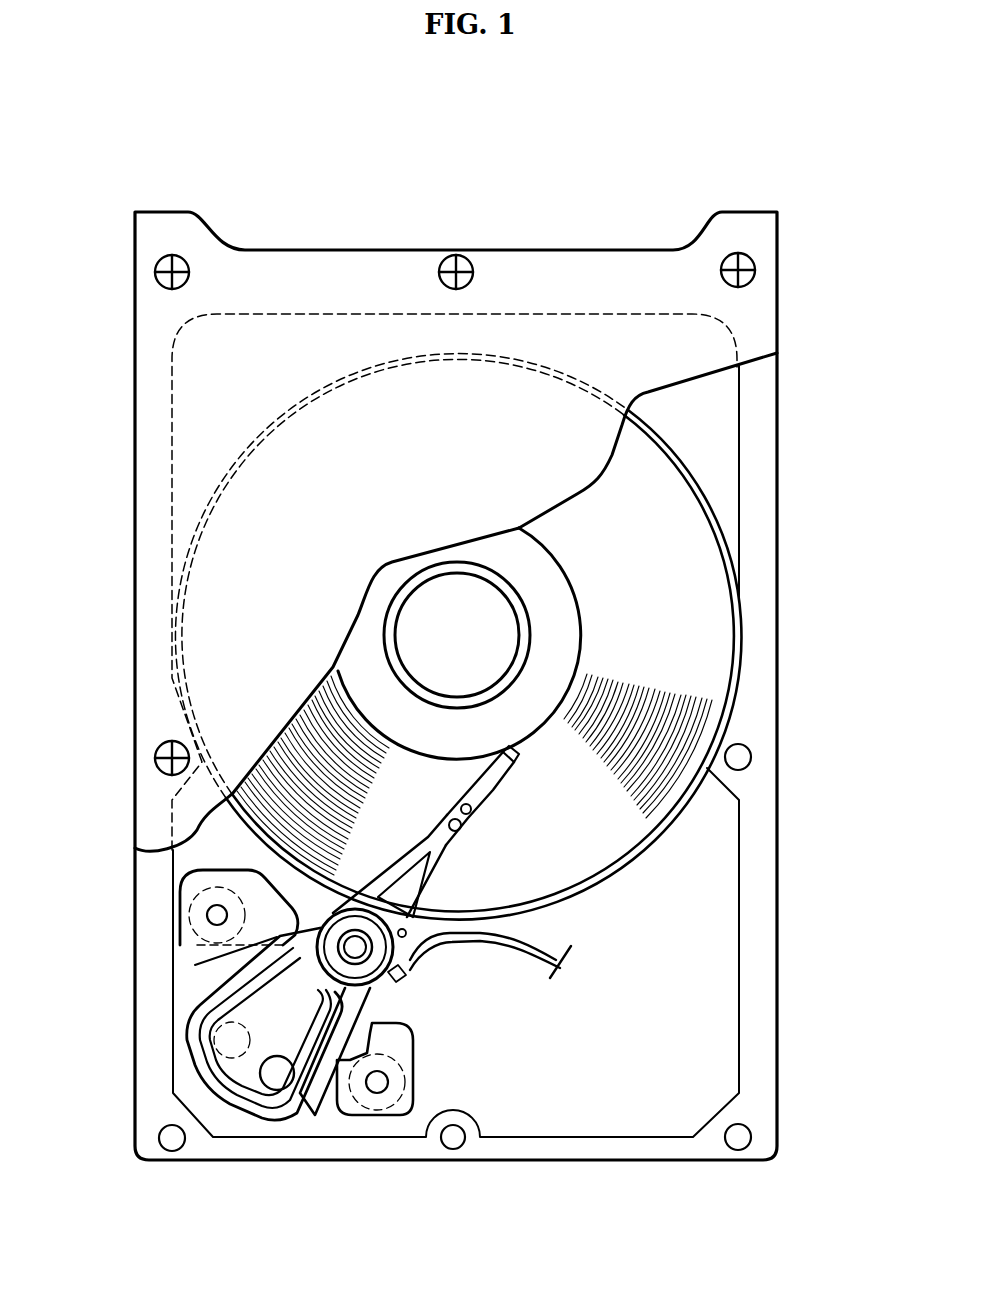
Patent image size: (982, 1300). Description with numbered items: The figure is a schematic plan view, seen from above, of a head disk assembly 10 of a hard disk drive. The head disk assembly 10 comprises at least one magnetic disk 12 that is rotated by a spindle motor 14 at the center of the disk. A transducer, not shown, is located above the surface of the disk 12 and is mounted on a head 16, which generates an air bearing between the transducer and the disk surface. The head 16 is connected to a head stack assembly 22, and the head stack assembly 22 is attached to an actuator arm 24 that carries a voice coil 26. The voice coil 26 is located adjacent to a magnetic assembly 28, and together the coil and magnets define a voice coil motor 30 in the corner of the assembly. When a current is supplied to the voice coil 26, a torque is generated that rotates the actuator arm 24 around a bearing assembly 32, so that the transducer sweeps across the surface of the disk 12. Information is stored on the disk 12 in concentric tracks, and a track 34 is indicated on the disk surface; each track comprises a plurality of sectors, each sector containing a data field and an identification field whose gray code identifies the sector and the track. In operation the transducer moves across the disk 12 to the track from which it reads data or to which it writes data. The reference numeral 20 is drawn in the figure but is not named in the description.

The head disk assembly 10 is at (779, 184).
The magnetic disk 12 is at (694, 572).
The spindle motor 14 is at (433, 606).
The head 16 is at (516, 765).
The actuator 20 is at (452, 884).
The head stack assembly 22 is at (494, 788).
The actuator arm 24 is at (275, 965).
The voice coil 26 is at (203, 1032).
The magnetic assembly 28 is at (217, 980).
The voice coil motor 30 is at (327, 1097).
The bearing assembly 32 is at (367, 958).
The track 34 is at (322, 748).